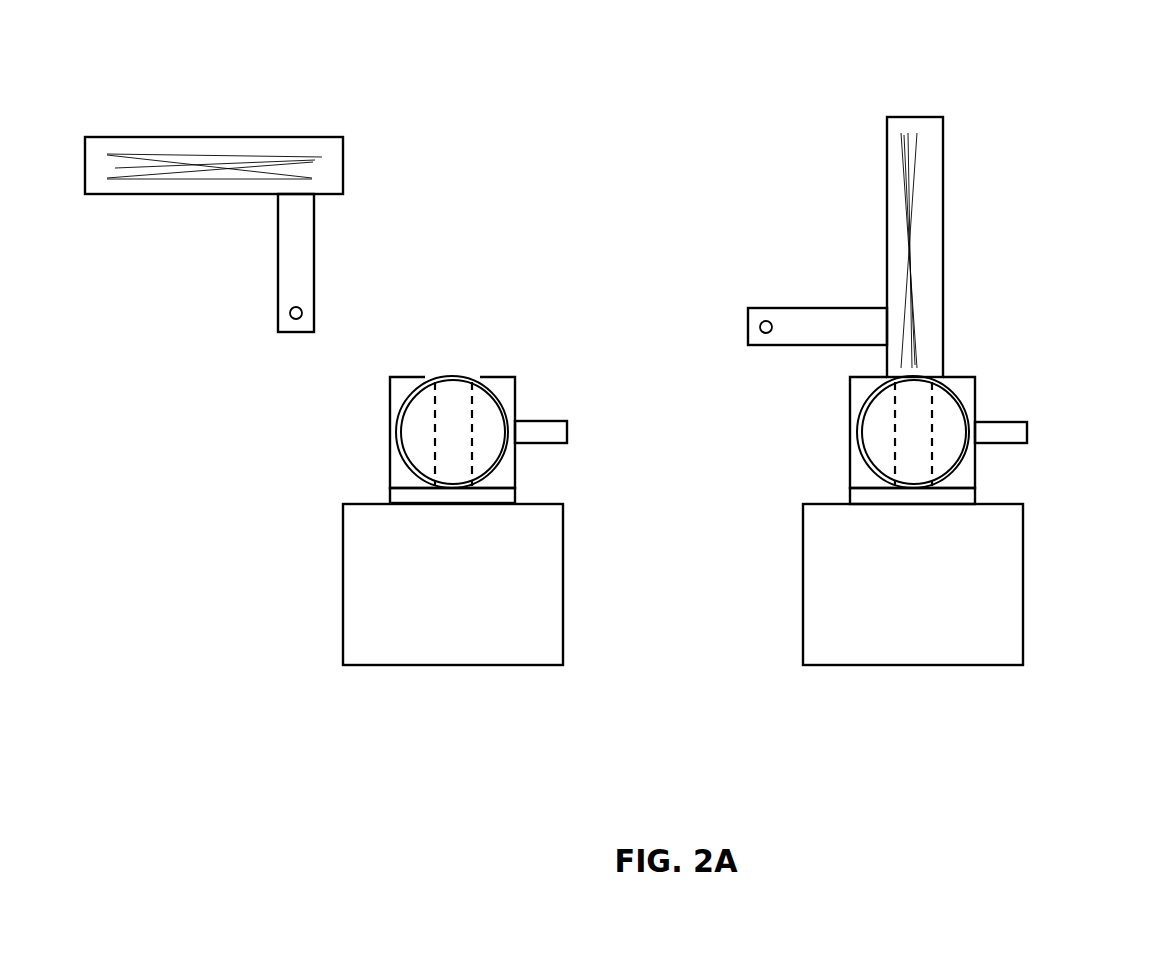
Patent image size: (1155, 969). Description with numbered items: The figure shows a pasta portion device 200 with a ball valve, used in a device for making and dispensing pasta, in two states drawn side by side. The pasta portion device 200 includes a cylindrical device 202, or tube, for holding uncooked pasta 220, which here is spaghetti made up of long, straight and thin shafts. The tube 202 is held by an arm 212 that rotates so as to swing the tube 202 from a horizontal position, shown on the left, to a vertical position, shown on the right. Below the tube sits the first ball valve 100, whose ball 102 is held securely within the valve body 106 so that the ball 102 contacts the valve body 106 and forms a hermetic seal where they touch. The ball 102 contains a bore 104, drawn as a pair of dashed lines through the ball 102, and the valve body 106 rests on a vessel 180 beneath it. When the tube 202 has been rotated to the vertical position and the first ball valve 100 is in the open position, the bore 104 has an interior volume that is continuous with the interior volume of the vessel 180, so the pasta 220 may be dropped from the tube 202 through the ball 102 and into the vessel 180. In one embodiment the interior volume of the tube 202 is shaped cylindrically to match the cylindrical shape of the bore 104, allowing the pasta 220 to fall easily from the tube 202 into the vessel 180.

The first ball valve 100 is at (368, 484).
The ball 102 is at (427, 378).
The bore 104 is at (462, 387).
The valve body 106 is at (400, 412).
The vessel 180 is at (368, 608).
The pasta portion device 200 is at (398, 108).
The cylindrical device 202 is at (197, 137).
The arm 212 is at (295, 275).
The uncooked pasta 220 is at (165, 167).